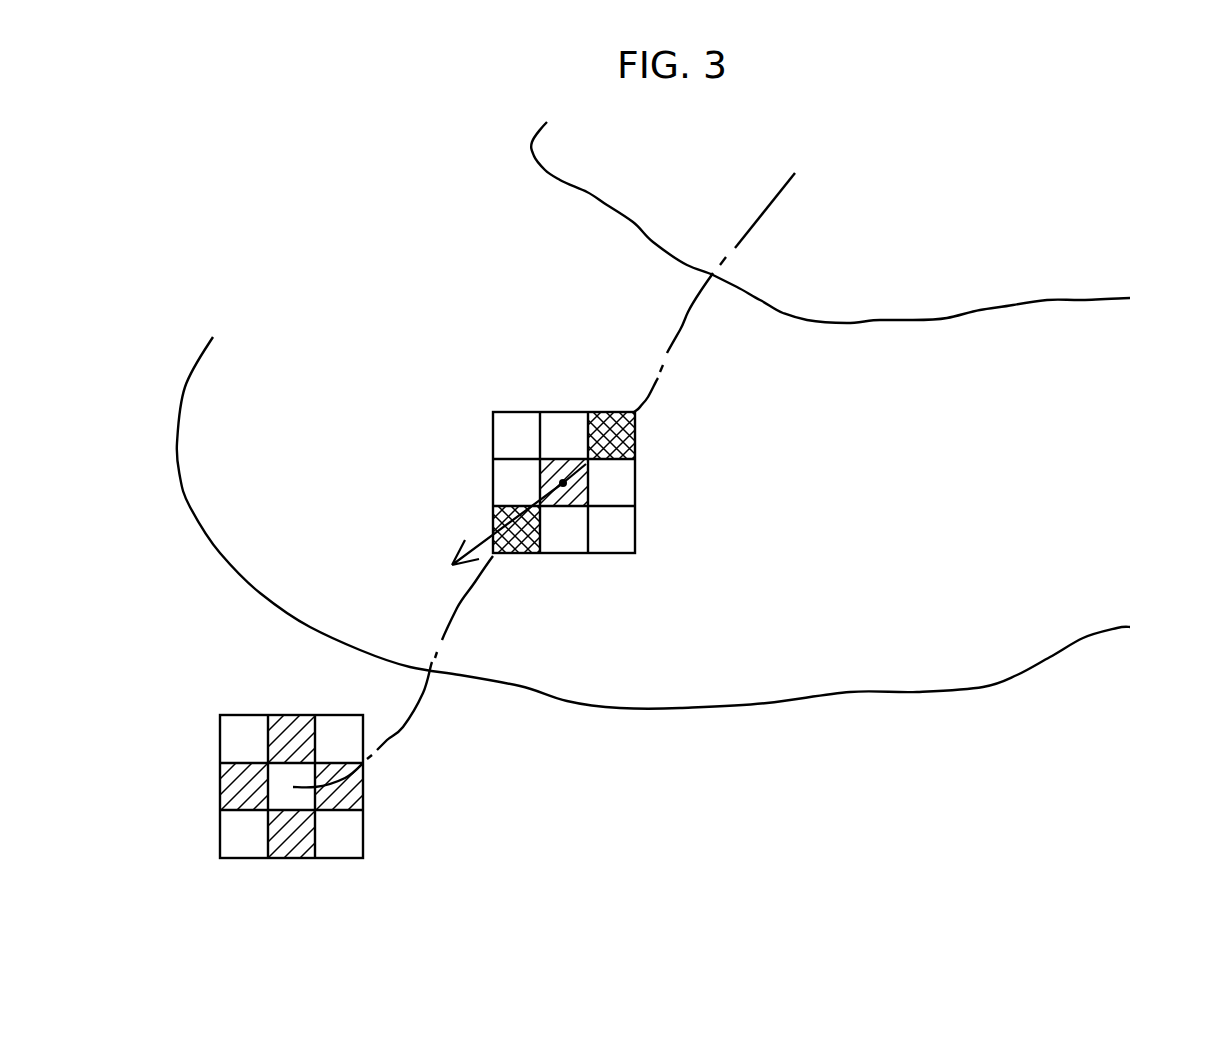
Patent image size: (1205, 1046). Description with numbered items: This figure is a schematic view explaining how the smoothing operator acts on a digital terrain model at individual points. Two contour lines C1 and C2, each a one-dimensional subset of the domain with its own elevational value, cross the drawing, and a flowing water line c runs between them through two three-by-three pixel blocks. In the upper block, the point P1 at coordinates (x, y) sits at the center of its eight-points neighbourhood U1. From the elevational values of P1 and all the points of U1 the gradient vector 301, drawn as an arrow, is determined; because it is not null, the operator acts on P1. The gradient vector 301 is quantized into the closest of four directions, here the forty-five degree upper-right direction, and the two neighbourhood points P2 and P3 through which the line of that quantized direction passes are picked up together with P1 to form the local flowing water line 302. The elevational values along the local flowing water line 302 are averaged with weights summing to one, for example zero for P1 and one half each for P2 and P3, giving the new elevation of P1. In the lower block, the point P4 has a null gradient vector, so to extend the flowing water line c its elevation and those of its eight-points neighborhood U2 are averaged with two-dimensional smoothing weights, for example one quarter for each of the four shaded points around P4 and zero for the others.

The gradient vector 301 is at (488, 538).
The local flowing water line 302 is at (592, 465).
The contour line C1 is at (856, 222).
The contour line C2 is at (677, 523).
The flowing water line c is at (755, 232).
The eight-points neighbourhood U1 is at (554, 491).
The eight-points neighborhood U2 is at (291, 782).
The point (x,y) P1 is at (565, 490).
The neighborhood point P2 is at (635, 448).
The neighborhood point P3 is at (517, 553).
The point with null gradient P4 is at (290, 793).